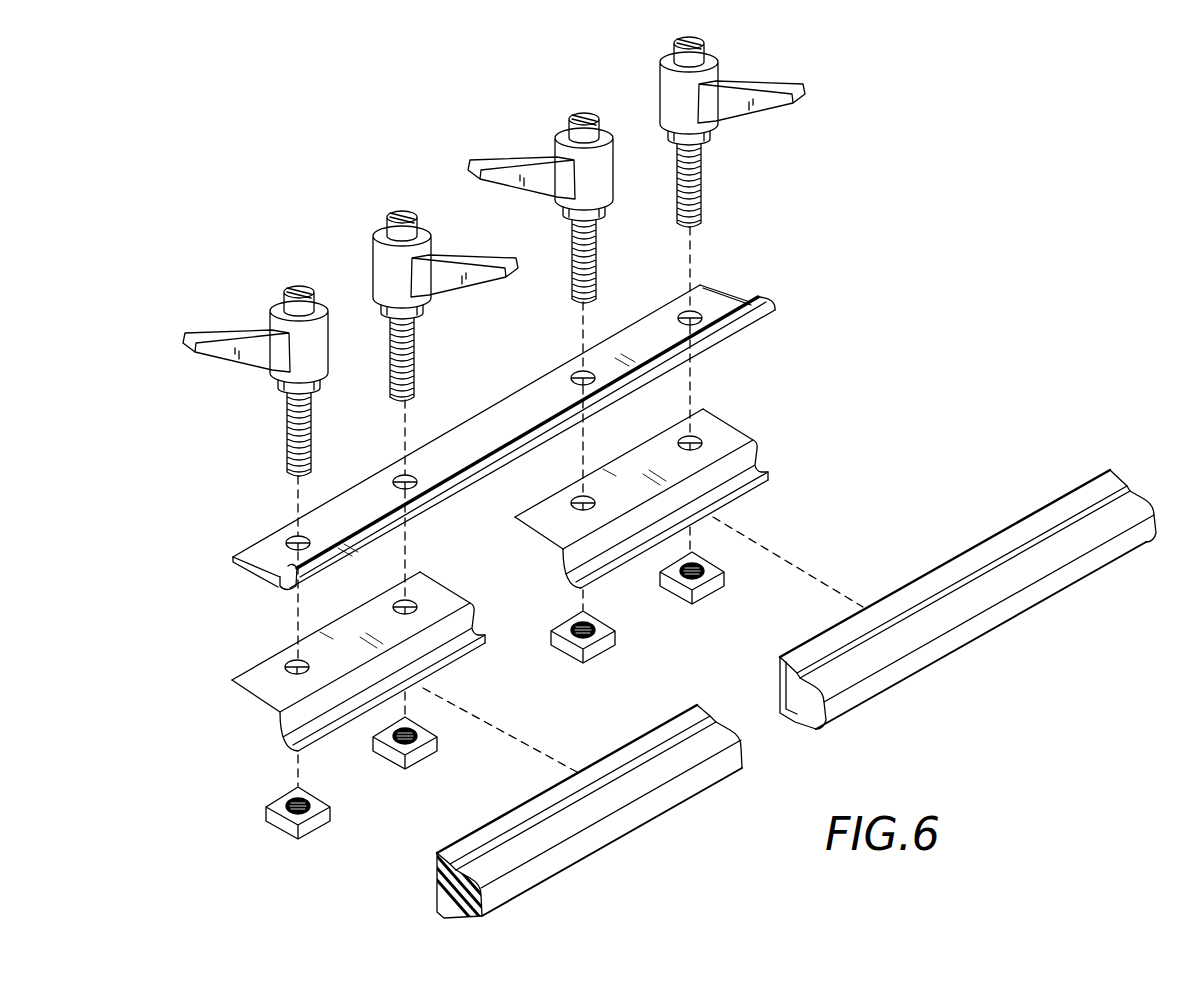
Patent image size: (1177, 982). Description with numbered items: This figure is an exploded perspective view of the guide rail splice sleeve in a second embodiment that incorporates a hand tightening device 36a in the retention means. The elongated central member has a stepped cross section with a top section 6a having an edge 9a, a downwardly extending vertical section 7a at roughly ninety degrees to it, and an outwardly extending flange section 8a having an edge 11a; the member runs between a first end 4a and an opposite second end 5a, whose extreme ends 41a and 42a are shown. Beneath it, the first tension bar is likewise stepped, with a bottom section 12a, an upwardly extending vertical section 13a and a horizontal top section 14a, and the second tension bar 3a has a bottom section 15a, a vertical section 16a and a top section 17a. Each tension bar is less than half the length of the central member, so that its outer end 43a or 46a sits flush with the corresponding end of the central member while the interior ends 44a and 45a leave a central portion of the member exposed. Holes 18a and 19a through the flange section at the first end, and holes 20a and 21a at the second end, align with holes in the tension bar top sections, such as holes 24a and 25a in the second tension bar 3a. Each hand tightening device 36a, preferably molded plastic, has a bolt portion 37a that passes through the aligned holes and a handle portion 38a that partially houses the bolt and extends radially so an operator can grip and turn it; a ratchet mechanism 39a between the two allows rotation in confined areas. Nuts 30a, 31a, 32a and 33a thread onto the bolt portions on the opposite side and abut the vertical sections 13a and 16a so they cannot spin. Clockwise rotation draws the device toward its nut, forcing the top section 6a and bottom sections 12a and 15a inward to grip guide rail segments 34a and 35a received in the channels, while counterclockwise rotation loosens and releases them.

The second tension bar 3a is at (619, 492).
The first end of central member 4a is at (494, 436).
The second end of central member 5a is at (657, 312).
The top section of central member 6a is at (362, 540).
The vertical section of central member 7a is at (275, 580).
The outwardly extending flange section of central member 8a is at (252, 550).
The edge of top section 9a is at (737, 322).
The edge of outwardly extending section 11a is at (708, 300).
The bottom section of first tension bar 12a is at (458, 648).
The vertical section of first tension bar 13a is at (467, 620).
The top section of first tension bar 14a is at (363, 638).
The bottom section of second tension bar 15a is at (605, 573).
The vertical section of second tension bar 16a is at (558, 573).
The top section of second tension bar 17a is at (515, 512).
The hole in central member 18a is at (292, 533).
The hole in central member 19a is at (410, 475).
The hole in central member 20a is at (580, 370).
The hole in central member 21a is at (687, 313).
The hole in second tension bar 24a is at (580, 497).
The hole in second tension bar 25a is at (688, 432).
The nut 30a is at (310, 822).
The nut 31a is at (423, 750).
The nut 32a is at (598, 648).
The nut 33a is at (703, 587).
The guide rail segment 34a is at (572, 858).
The guide rail segment 35a is at (980, 618).
The hand tightening device 36a is at (322, 348).
The bolt portion 37a is at (287, 425).
The handle portion 38a is at (248, 333).
The ratchet mechanism 39a is at (307, 380).
The end of central member 41a is at (258, 563).
The end of central member 42a is at (728, 303).
The end of first tension bar 43a is at (270, 687).
The interior end of first tension bar 44a is at (418, 580).
The interior end of second tension bar 45a is at (552, 523).
The end of second tension bar 46a is at (707, 417).